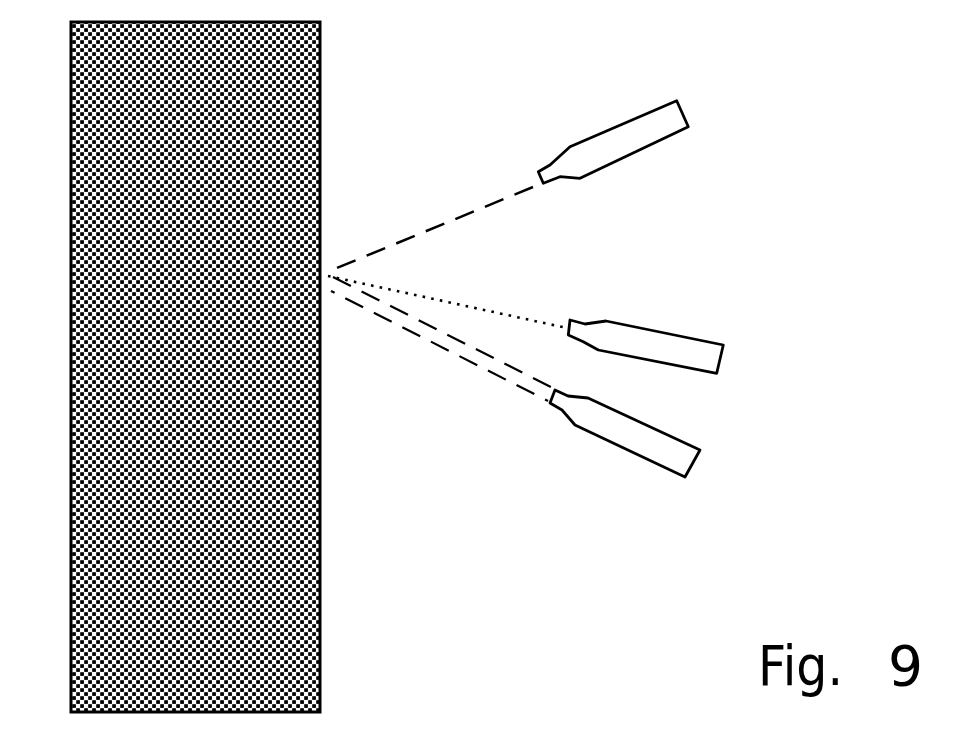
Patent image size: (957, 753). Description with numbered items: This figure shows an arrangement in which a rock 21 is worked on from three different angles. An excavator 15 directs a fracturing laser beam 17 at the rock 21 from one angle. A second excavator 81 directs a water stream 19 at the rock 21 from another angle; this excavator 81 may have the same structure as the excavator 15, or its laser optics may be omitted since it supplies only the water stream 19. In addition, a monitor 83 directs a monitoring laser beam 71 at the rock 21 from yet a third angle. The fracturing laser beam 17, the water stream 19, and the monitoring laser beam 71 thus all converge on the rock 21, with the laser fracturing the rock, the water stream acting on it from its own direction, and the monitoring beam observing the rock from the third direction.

The excavator 15 is at (588, 130).
The fracturing laser beam 17 is at (527, 203).
The monitoring laser beam 71 is at (515, 302).
The monitor 83 is at (712, 324).
The excavator 81 is at (692, 428).
The water stream 19 is at (448, 375).
The rock 21 is at (345, 628).